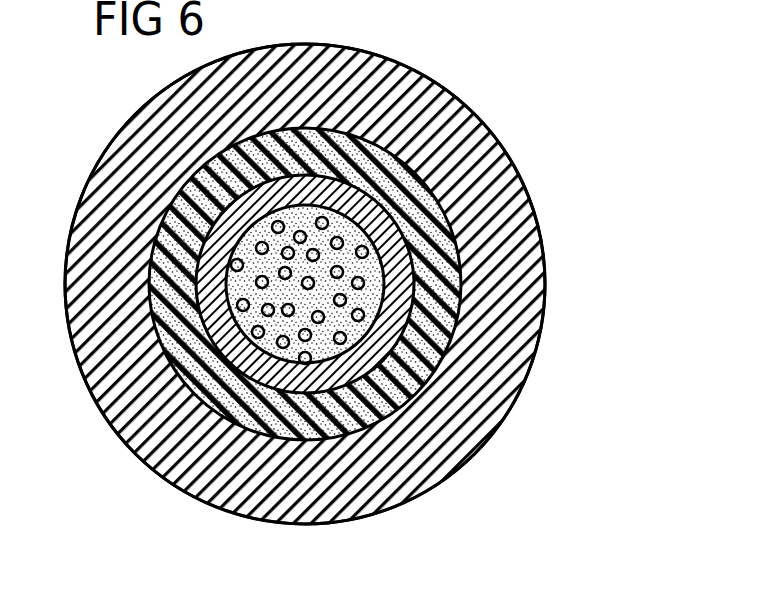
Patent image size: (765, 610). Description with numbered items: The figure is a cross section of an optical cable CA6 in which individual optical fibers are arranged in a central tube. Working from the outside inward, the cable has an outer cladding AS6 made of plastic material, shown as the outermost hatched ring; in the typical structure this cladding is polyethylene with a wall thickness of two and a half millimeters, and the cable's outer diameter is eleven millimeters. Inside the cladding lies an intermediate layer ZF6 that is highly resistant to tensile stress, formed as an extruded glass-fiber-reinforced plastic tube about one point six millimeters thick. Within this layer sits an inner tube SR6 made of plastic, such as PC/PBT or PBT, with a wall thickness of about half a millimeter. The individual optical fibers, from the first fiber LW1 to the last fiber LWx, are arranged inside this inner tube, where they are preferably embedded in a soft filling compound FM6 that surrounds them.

The outer cladding AS6 is at (411, 95).
The optical cable CA6 is at (494, 105).
The intermediate layer ZF6 is at (441, 200).
The inner tube SR6 is at (413, 307).
The filling compound FM6 is at (372, 302).
The optical fiber LW1 is at (345, 343).
The optical fiber LWx is at (310, 366).